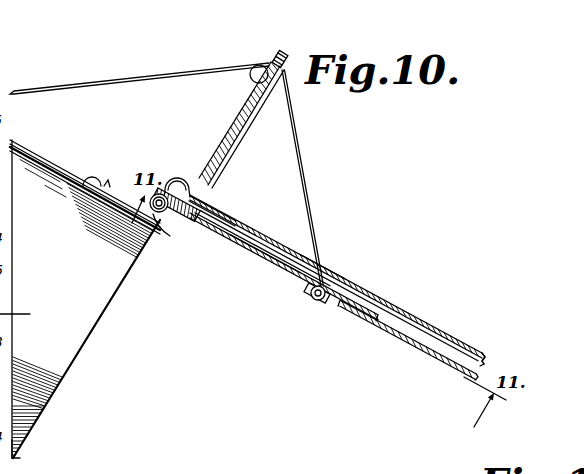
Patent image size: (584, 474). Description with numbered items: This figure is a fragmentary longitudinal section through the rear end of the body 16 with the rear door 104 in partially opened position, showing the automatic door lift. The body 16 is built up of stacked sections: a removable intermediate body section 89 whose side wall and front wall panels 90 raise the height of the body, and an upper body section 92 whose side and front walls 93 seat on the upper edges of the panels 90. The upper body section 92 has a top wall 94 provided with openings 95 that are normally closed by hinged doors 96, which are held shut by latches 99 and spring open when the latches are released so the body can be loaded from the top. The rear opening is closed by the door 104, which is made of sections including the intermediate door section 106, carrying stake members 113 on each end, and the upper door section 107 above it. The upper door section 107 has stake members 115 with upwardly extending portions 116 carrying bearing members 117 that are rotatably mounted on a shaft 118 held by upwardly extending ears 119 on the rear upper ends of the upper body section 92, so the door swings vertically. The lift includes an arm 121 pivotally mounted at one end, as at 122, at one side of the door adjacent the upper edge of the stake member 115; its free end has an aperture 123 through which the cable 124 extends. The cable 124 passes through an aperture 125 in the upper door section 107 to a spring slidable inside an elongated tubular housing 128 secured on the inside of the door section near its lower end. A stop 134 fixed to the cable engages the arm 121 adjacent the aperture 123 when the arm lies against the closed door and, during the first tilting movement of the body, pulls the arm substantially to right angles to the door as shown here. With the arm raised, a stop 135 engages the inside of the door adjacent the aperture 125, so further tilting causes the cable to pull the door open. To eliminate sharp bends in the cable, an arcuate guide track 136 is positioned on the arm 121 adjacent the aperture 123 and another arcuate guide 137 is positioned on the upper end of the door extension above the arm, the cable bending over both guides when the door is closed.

The body 16 is at (60, 385).
The intermediate body section 89 is at (40, 420).
The side wall and front wall panels 90 is at (19, 447).
The upper body section 92 is at (98, 323).
The side and front walls 93 is at (117, 286).
The top wall 94 is at (112, 222).
The openings 95 is at (90, 197).
The hinged doors 96 is at (33, 152).
The latches 99 is at (88, 175).
The door 104 is at (484, 353).
The intermediate door section 106 is at (416, 343).
The upper door section 107 is at (265, 257).
The stake members 113 is at (434, 327).
The stake members 115 is at (232, 238).
The upwardly extending portions 116 is at (212, 184).
The bearing members 117 is at (164, 212).
The shaft 118 is at (140, 212).
The ears 119 is at (160, 222).
The arm 121 is at (226, 148).
The pivotal mounting 122 is at (217, 207).
The aperture 123 is at (276, 56).
The cable 124 is at (163, 77).
The aperture 125 is at (330, 273).
The elongated tubular housing 128 is at (316, 301).
The stop 134 is at (277, 90).
The stop 135 is at (310, 294).
The arcuate guide track 136 is at (253, 76).
The arcuate guide 137 is at (177, 177).